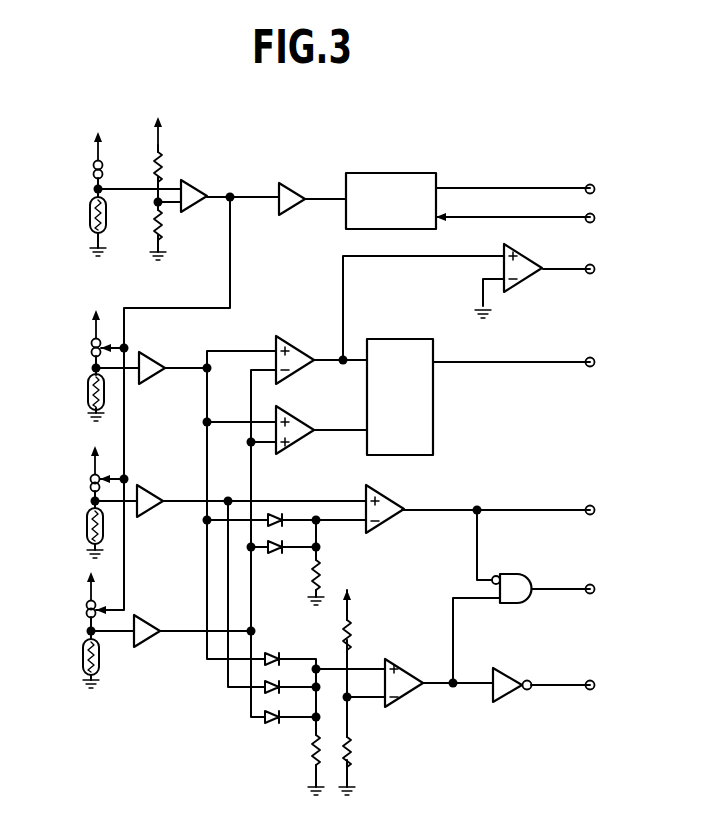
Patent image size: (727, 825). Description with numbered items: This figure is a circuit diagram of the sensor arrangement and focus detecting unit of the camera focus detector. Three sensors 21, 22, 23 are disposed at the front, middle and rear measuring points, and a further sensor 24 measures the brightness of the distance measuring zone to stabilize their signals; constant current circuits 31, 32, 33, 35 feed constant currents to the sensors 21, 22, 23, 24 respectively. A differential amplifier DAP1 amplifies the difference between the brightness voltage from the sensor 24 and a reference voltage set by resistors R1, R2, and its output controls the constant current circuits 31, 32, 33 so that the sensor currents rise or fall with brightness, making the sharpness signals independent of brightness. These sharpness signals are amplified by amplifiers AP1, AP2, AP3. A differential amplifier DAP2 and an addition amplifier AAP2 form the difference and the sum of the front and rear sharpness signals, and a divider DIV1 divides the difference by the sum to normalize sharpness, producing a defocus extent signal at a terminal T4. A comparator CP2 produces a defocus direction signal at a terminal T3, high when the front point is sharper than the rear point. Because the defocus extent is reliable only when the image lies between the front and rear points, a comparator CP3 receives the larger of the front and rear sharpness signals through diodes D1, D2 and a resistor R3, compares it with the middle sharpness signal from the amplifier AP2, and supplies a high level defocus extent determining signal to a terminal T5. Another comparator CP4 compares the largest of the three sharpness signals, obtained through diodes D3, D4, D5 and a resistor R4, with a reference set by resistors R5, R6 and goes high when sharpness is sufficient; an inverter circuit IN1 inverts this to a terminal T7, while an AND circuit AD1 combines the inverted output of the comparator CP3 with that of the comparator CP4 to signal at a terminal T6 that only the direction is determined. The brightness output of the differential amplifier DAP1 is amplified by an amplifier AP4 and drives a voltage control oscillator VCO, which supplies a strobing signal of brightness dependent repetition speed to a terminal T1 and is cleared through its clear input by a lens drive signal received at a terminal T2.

The constant current circuit 35 is at (90, 165).
The sensor 24 is at (90, 221).
The constant current circuit 31 is at (85, 346).
The sensor 21 is at (85, 397).
The constant current circuit 32 is at (84, 483).
The sensor 22 is at (85, 533).
The constant current circuit 33 is at (84, 608).
The sensor 23 is at (82, 655).
The resistor R1 is at (154, 154).
The resistor R2 is at (154, 226).
The resistor R3 is at (322, 575).
The resistor R4 is at (314, 750).
The resistor R5 is at (351, 630).
The resistor R6 is at (352, 748).
The differential amplifier DAP1 is at (189, 184).
The differential amplifier DAP2 is at (292, 346).
The addition amplifier AAP2 is at (298, 422).
The amplifier AP1 is at (148, 364).
The amplifier AP2 is at (146, 494).
The amplifier AP3 is at (144, 626).
The amplifier AP4 is at (288, 186).
The voltage control oscillator VCO is at (386, 180).
The divider DIV1 is at (394, 342).
The comparator CP2 is at (517, 264).
The comparator CP3 is at (394, 504).
The comparator CP4 is at (406, 668).
The AND circuit AD1 is at (512, 576).
The inverter circuit IN1 is at (508, 672).
The diode D1 is at (277, 511).
The diode D2 is at (286, 555).
The diode D3 is at (270, 652).
The diode D4 is at (262, 692).
The diode D5 is at (270, 726).
The terminal T1 is at (604, 191).
The terminal T2 is at (604, 220).
The terminal T3 is at (604, 272).
The terminal T4 is at (604, 365).
The terminal T5 is at (604, 513).
The terminal T6 is at (604, 592).
The terminal T7 is at (604, 687).